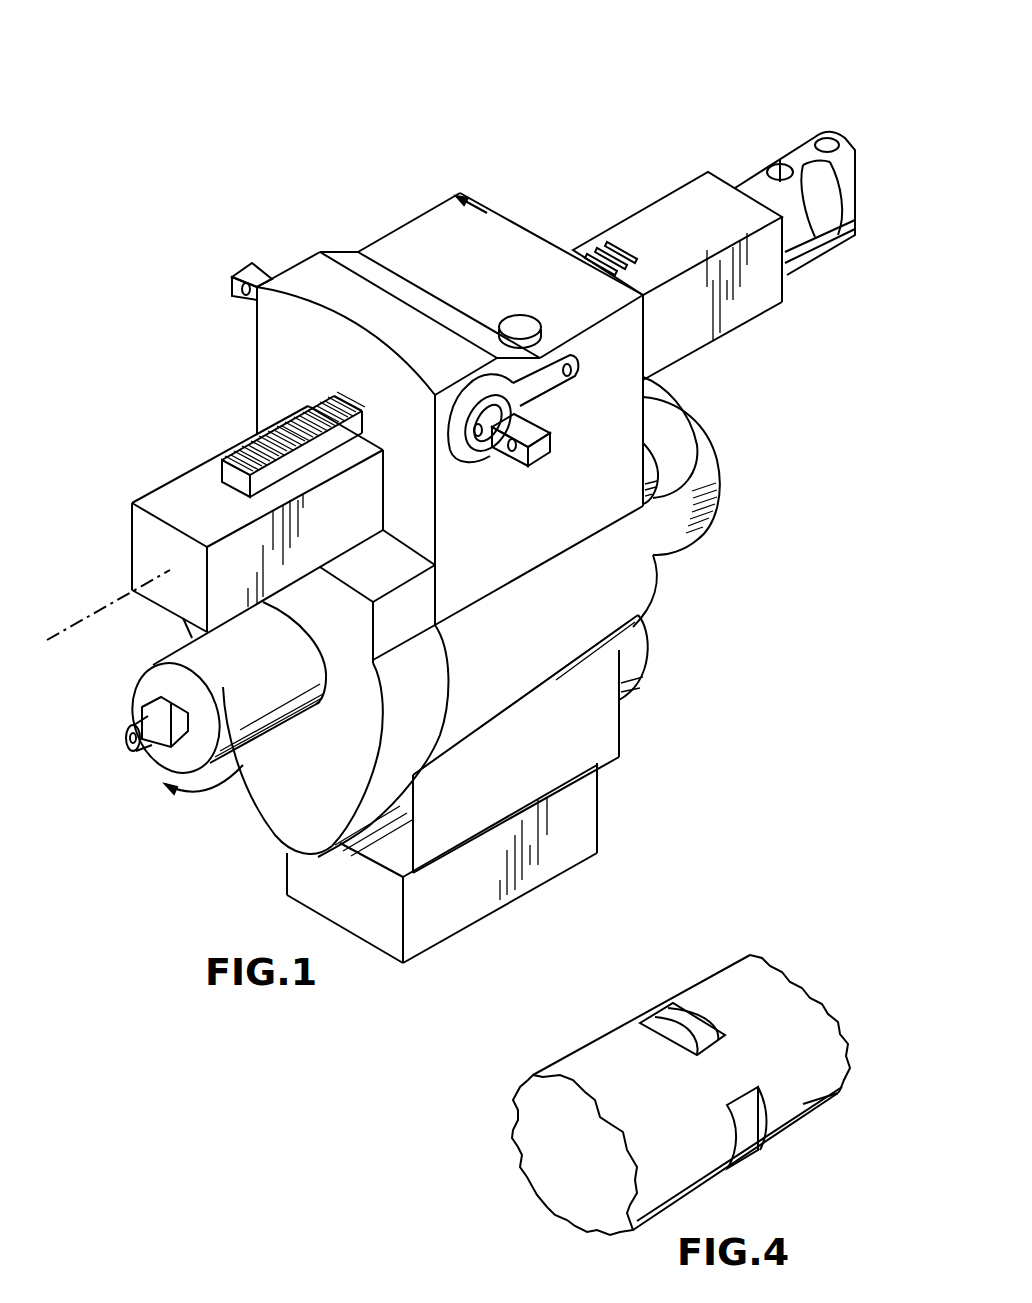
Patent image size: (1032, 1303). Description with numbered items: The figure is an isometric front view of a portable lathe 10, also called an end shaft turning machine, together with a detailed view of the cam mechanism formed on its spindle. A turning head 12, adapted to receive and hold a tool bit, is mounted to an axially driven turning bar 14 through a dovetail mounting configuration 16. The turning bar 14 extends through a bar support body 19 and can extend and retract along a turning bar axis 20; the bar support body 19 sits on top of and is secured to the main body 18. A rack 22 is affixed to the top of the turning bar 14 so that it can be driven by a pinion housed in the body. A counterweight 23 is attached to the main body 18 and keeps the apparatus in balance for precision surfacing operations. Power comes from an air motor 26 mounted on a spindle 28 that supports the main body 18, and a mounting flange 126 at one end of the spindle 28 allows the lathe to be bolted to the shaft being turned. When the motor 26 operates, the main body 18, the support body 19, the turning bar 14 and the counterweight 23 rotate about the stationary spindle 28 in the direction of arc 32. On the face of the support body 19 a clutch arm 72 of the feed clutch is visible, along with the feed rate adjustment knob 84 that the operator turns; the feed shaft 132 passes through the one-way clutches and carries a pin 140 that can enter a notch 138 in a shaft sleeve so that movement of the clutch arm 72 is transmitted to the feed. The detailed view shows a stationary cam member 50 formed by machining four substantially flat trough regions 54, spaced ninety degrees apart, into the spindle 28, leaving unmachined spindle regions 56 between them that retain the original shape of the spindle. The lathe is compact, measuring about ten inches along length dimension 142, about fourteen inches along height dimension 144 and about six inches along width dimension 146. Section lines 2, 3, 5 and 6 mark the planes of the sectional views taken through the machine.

In FIG. 1, the portable lathe 10 is at (641, 75).
In FIG. 1, the turning head 12 is at (818, 219).
In FIG. 1, the turning bar 14 is at (757, 304).
In FIG. 1, the dovetail mounting configuration 16 is at (815, 198).
In FIG. 1, the main body 18 is at (645, 597).
In FIG. 1, the bar support body 19 is at (432, 222).
In FIG. 1, the turning bar axis 20 is at (85, 620).
In FIG. 1, the rack 22 is at (236, 443).
In FIG. 1, the counterweight 23 is at (592, 817).
In FIG. 1, the air motor 26 is at (648, 670).
In FIG. 1, the spindle 28 is at (722, 466).
In FIG. 4, the spindle 28 is at (543, 1167).
In FIG. 1, the arc 32 is at (213, 800).
In FIG. 4, the stationary cam member 50 is at (746, 1150).
In FIG. 4, the trough regions 54 is at (690, 1026).
In FIG. 4, the spindle regions 56 is at (745, 1057).
In FIG. 1, the clutch arm 72 is at (580, 363).
In FIG. 1, the feed rate adjustment knob 84 is at (510, 317).
In FIG. 1, the mounting flange 126 is at (690, 421).
In FIG. 1, the feed shaft 132 is at (543, 462).
In FIG. 1, the notch 138 is at (467, 437).
In FIG. 1, the pin 140 is at (479, 448).
In FIG. 1, the length dimension 142 is at (857, 427).
In FIG. 1, the height dimension 144 is at (763, 16).
In FIG. 1, the width dimension 146 is at (490, 190).
In FIG. 1, the section line 2 is at (883, 115).
In FIG. 1, the section line 3 is at (278, 232).
In FIG. 1, the section line 5 is at (418, 390).
In FIG. 1, the section line 6 is at (192, 255).